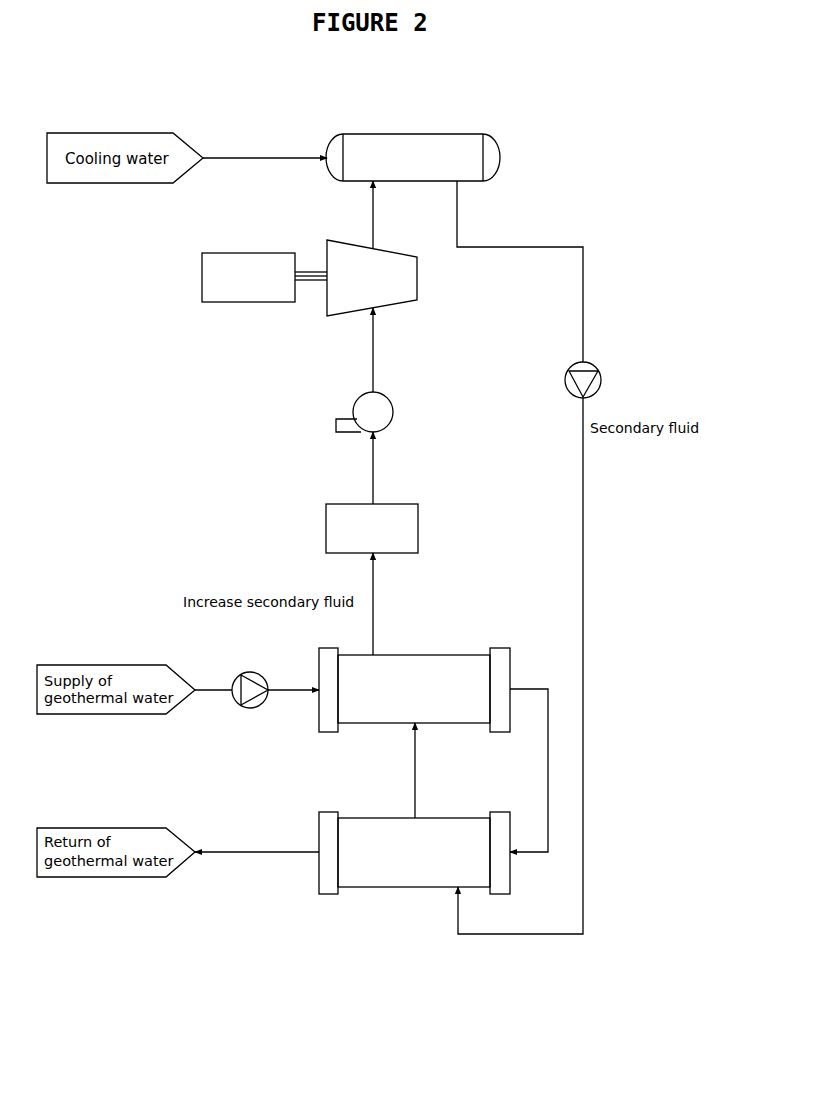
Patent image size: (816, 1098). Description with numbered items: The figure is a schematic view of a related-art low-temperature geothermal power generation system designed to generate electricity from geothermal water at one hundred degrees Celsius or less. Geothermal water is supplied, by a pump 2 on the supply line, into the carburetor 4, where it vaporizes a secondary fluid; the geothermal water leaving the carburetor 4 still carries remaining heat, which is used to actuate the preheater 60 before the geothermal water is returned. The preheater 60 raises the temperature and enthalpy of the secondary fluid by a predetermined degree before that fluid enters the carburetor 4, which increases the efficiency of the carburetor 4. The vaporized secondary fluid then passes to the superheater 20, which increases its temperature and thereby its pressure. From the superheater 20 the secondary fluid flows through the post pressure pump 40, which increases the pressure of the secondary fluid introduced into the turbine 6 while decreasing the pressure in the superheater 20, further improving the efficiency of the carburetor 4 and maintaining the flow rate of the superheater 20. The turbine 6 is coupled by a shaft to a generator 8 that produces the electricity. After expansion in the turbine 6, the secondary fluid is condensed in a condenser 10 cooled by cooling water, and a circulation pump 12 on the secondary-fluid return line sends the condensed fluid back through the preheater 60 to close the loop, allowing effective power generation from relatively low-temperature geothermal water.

The geothermal water supply pump 2 is at (262, 672).
The carburetor 4 is at (448, 655).
The turbine 6 is at (393, 250).
The generator 8 is at (246, 253).
The condenser 10 is at (450, 134).
The secondary fluid circulation pump 12 is at (590, 363).
The superheater 20 is at (405, 504).
The post pressure pump 40 is at (383, 393).
The preheater 60 is at (448, 818).